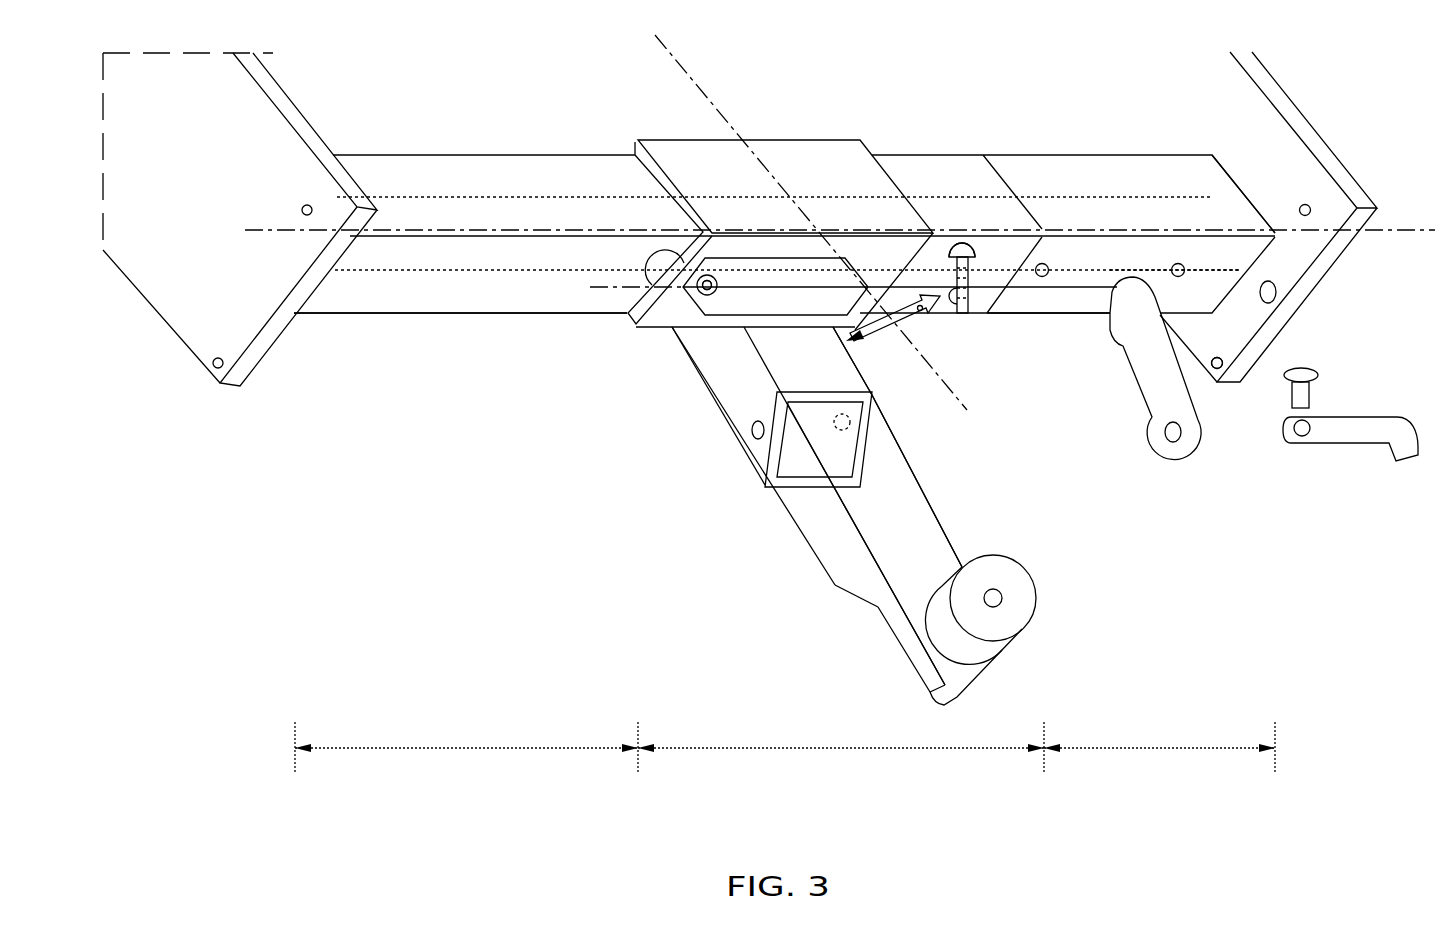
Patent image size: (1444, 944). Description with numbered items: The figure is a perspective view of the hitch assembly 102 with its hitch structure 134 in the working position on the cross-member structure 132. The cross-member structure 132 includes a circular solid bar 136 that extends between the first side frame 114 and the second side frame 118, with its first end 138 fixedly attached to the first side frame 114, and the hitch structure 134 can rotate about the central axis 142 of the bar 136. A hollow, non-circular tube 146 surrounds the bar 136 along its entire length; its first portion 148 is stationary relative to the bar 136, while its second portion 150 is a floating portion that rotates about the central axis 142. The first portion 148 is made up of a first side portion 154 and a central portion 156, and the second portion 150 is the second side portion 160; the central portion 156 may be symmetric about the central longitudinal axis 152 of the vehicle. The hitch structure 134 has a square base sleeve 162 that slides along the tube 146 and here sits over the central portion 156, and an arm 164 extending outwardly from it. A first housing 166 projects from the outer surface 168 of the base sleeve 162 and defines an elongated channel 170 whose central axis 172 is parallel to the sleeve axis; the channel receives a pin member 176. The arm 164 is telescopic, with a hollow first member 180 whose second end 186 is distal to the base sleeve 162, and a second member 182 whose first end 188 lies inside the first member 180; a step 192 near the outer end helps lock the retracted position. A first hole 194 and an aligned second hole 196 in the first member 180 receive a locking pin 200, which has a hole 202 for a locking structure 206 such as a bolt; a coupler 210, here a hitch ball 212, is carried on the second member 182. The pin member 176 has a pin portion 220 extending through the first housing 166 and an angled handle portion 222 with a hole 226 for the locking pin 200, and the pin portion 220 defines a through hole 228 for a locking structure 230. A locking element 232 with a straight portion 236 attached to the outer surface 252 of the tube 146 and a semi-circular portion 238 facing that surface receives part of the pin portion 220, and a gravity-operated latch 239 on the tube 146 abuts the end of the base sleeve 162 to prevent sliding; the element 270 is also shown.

The hitch assembly 102 is at (930, 148).
The first side frame 114 is at (1297, 95).
The second side frame 118 is at (300, 115).
The cross-member structure 132 is at (876, 148).
The hitch structure 134 is at (848, 553).
The bar 136 is at (470, 190).
The first end 138 is at (1242, 213).
The central axis 142 is at (1395, 232).
The tube 146 is at (955, 165).
The first portion 148 is at (548, 152).
The second portion 150 is at (1246, 263).
The central longitudinal axis 152 is at (665, 52).
The first side portion 154 is at (467, 750).
The central portion 156 is at (838, 750).
The second side portion 160 is at (1223, 372).
The base sleeve 162 is at (668, 153).
The arm 164 is at (735, 399).
The first housing 166 is at (866, 333).
The outer surface 168 is at (780, 225).
The elongated channel 170 is at (690, 302).
The central axis 172 is at (597, 292).
The pin member 176 is at (1023, 322).
The first member 180 is at (871, 388).
The second member 182 is at (790, 496).
The second end 186 is at (768, 470).
The first end 188 is at (793, 396).
The step 192 is at (847, 606).
The first hole 194 is at (745, 432).
The second hole 196 is at (836, 440).
The locking pin 200 is at (1382, 413).
The hole 202 is at (1308, 444).
The locking structure 206 is at (1312, 403).
The coupler 210 is at (1035, 602).
The hitch ball 212 is at (1007, 626).
The pin portion 220 is at (1047, 268).
The handle portion 222 is at (1143, 358).
The hole 226 is at (1165, 442).
The through hole 228 is at (968, 292).
The locking structure 230 is at (965, 232).
The locking element 232 is at (690, 300).
The straight portion 236 is at (640, 325).
The semi-circular portion 238 is at (658, 252).
The latch 239 is at (918, 312).
The outer surface 252 is at (463, 304).
The plate hole 270 is at (1290, 294).